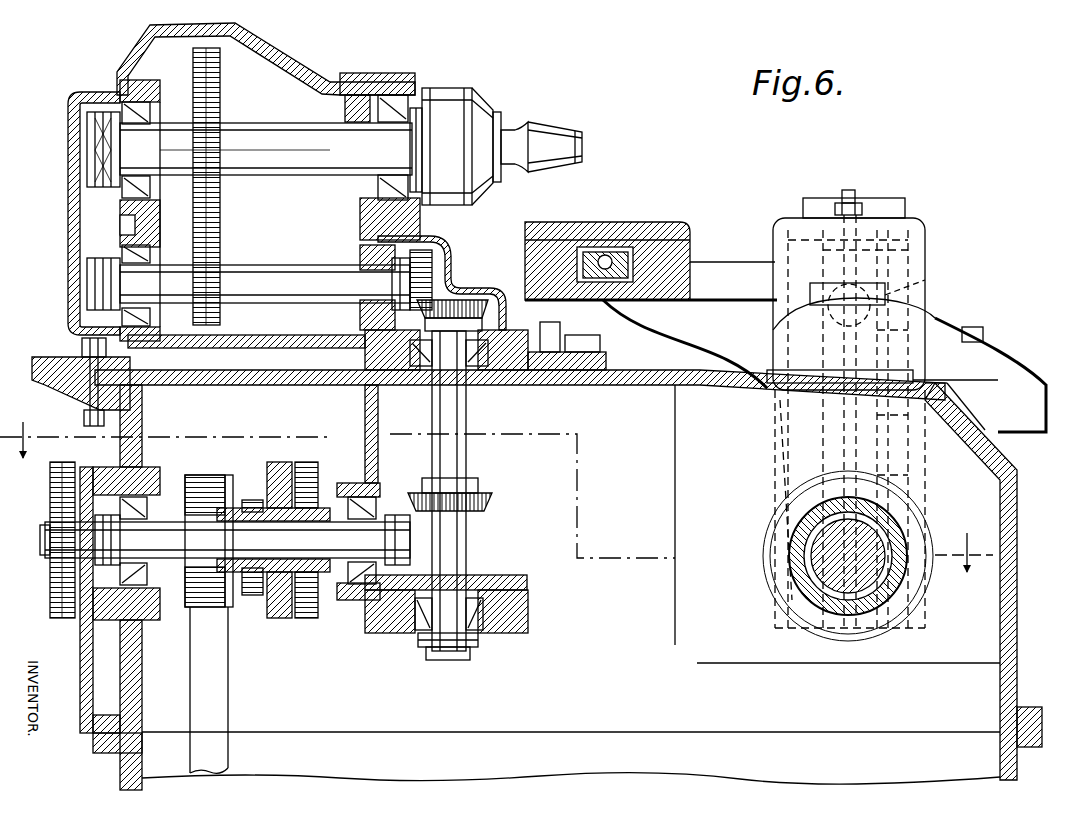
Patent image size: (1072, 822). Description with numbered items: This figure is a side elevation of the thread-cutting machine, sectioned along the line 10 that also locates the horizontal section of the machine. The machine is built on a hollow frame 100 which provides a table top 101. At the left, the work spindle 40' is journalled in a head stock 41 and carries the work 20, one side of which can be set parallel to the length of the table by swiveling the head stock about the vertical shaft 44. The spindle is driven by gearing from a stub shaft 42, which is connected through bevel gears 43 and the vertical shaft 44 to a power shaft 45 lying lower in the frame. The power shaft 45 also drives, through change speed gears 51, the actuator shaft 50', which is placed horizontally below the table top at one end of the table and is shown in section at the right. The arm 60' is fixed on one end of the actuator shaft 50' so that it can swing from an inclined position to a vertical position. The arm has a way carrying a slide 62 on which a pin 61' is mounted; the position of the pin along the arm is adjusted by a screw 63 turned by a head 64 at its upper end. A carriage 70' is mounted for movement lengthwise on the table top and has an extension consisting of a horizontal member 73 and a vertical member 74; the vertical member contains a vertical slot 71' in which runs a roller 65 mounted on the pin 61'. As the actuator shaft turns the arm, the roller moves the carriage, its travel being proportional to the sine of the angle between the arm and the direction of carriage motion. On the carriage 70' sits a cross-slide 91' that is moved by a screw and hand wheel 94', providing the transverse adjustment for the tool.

The section line 10 is at (497, 495).
The work 20 is at (562, 131).
The work spindle 40' is at (254, 142).
The head stock 41 is at (68, 202).
The stub shaft 42 is at (297, 254).
The bevel gears 43 is at (432, 283).
The vertical shaft 44 is at (456, 414).
The power shaft 45 is at (158, 537).
The actuator shaft 50' is at (822, 556).
The change speed gears 51 is at (50, 487).
The arm 60' is at (882, 408).
The pin 61' is at (904, 287).
The slide 62 is at (837, 252).
The screw 63 is at (844, 422).
The head 64 is at (850, 192).
The roller 65 is at (905, 312).
The carriage 70' is at (685, 339).
The vertical slot 71' is at (775, 453).
The horizontal member 73 is at (722, 271).
The vertical member 74 is at (788, 413).
The cross-slide 91' is at (607, 245).
The screw and hand wheel 94' is at (609, 234).
The hollow frame 100 is at (1012, 488).
The table top 101 is at (618, 354).